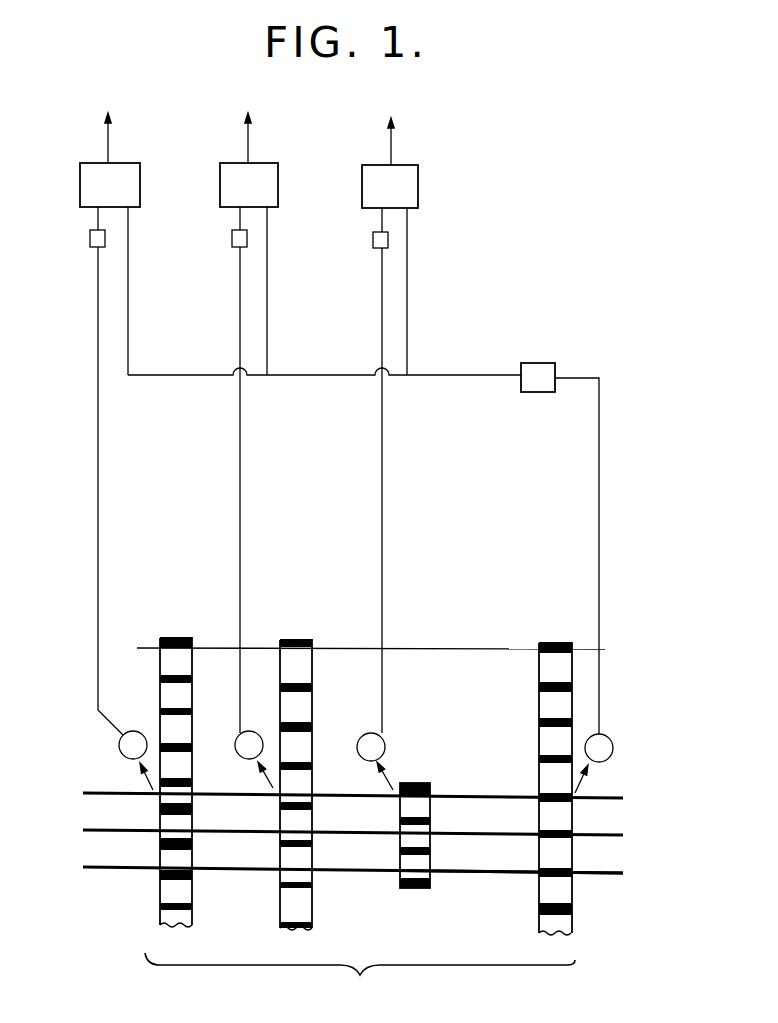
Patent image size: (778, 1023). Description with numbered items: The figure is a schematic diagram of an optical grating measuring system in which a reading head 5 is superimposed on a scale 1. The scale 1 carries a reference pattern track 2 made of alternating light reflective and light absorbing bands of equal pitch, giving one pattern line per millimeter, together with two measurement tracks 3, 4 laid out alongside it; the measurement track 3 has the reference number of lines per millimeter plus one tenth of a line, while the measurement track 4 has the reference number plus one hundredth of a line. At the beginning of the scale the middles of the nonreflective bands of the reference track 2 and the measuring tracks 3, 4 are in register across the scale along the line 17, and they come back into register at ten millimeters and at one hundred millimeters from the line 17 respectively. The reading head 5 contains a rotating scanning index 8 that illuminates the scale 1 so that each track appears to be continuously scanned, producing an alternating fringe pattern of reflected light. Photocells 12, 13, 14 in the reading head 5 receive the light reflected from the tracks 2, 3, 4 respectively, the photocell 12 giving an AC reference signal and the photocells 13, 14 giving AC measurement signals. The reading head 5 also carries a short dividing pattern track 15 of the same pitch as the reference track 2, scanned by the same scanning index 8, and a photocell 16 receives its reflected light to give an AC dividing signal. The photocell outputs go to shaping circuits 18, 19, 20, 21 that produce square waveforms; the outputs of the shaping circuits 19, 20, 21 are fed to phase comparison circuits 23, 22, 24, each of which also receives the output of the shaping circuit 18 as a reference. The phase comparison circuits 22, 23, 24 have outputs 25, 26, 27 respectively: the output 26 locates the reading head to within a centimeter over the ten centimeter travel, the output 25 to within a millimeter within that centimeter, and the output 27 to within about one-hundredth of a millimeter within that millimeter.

The scale 1 is at (360, 980).
The reference pattern track 2 is at (539, 893).
The measurement track 3 is at (312, 888).
The measurement track 4 is at (193, 883).
The reading head 5 is at (113, 868).
The scanning index 8 is at (608, 875).
The photocell 12 is at (528, 693).
The photocell 13 is at (203, 630).
The photocell 14 is at (138, 748).
The dividing pattern track 15 is at (428, 785).
The photocell 16 is at (373, 743).
The line 17 is at (488, 650).
The shaping circuit 18 is at (495, 333).
The shaping circuit 19 is at (237, 247).
The shaping circuit 20 is at (92, 243).
The shaping circuit 21 is at (373, 240).
The phase comparison circuit 22 is at (223, 187).
The phase comparison circuit 23 is at (137, 180).
The phase comparison circuit 24 is at (415, 185).
The output 25 is at (247, 123).
The output 26 is at (106, 123).
The output 27 is at (394, 124).